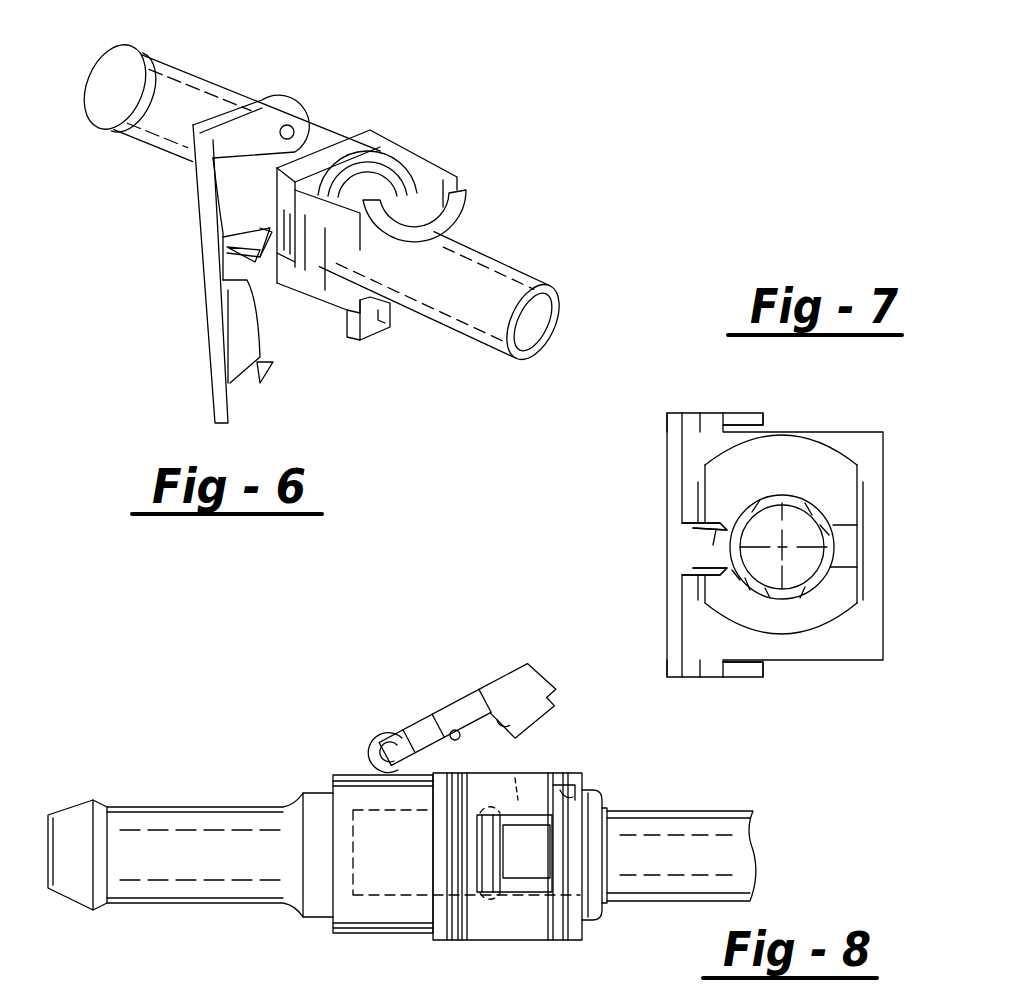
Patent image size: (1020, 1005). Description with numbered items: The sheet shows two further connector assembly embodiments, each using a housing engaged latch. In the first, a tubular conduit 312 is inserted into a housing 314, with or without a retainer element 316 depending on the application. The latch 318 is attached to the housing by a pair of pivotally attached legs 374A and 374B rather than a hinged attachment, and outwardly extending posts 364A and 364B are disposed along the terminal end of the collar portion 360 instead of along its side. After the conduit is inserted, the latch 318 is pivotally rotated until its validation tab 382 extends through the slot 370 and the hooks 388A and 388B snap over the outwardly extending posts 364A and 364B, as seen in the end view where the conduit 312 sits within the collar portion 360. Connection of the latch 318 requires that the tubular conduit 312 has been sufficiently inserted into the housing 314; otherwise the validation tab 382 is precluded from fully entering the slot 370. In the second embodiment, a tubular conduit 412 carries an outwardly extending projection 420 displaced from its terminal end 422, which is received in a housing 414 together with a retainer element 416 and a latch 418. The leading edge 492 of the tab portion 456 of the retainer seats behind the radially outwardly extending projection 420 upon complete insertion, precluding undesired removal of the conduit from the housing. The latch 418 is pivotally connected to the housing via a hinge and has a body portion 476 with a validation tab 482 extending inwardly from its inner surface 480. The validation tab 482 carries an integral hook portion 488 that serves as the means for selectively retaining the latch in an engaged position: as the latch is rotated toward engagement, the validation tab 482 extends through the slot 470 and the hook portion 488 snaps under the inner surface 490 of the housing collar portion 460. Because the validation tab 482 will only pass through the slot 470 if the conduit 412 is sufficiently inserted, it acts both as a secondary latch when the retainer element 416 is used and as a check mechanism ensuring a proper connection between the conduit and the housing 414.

In FIG. 6, the tubular conduit 312 is at (522, 274).
In FIG. 7, the tubular conduit 312 is at (810, 510).
In FIG. 6, the housing 314 is at (196, 80).
In FIG. 6, the retainer element 316 is at (457, 208).
In FIG. 6, the latch 318 is at (197, 252).
In FIG. 6, the collar portion 360 is at (437, 177).
In FIG. 7, the collar portion 360 is at (862, 432).
In FIG. 6, the outwardly extending post 364A is at (393, 176).
In FIG. 7, the outwardly extending post 364A is at (700, 413).
In FIG. 6, the outwardly extending post 364B is at (365, 337).
In FIG. 7, the outwardly extending post 364B is at (705, 678).
In FIG. 6, the slot 370 is at (317, 240).
In FIG. 6, the pivotally attached leg 374A is at (268, 123).
In FIG. 6, the pivotally attached leg 374B is at (223, 216).
In FIG. 6, the validation tab 382 is at (233, 318).
In FIG. 7, the validation tab 382 is at (723, 527).
In FIG. 6, the hook 388A is at (240, 250).
In FIG. 7, the hook 388A is at (745, 413).
In FIG. 6, the hook 388B is at (265, 368).
In FIG. 7, the hook 388B is at (748, 678).
In FIG. 8, the tubular conduit 412 is at (727, 827).
In FIG. 8, the housing 414 is at (153, 815).
In FIG. 8, the retainer element 416 is at (605, 913).
In FIG. 8, the latch 418 is at (423, 722).
In FIG. 8, the outwardly extending projection 420 is at (487, 900).
In FIG. 8, the terminal end 422 is at (337, 842).
In FIG. 8, the tab portion 456 is at (607, 808).
In FIG. 8, the housing collar portion 460 is at (447, 920).
In FIG. 8, the slot 470 is at (523, 767).
In FIG. 8, the body portion 476 is at (362, 746).
In FIG. 8, the inner surface 480 is at (437, 720).
In FIG. 8, the validation tab 482 is at (483, 693).
In FIG. 8, the hook portion 488 is at (553, 700).
In FIG. 8, the inner surface 490 is at (587, 765).
In FIG. 8, the leading edge 492 is at (530, 840).